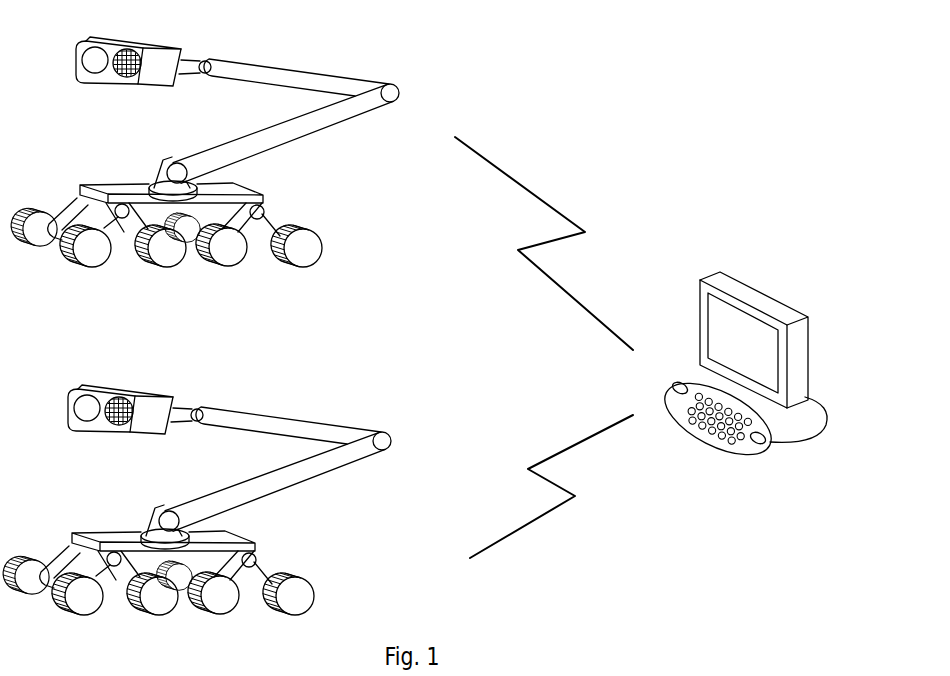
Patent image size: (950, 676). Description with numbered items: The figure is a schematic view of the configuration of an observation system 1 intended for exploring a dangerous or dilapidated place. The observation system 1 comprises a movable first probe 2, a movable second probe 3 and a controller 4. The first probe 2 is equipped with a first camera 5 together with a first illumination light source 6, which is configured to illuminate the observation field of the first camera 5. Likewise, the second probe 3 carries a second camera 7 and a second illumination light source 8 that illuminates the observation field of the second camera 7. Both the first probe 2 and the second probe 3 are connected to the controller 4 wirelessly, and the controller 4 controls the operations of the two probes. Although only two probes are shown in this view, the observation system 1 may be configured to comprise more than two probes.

The observation system 1 is at (631, 106).
The first probe 2 is at (215, 137).
The second probe 3 is at (197, 465).
The controller 4 is at (765, 290).
The first camera 5 is at (92, 86).
The first illumination light source 6 is at (123, 87).
The second camera 7 is at (83, 445).
The second illumination light source 8 is at (118, 448).